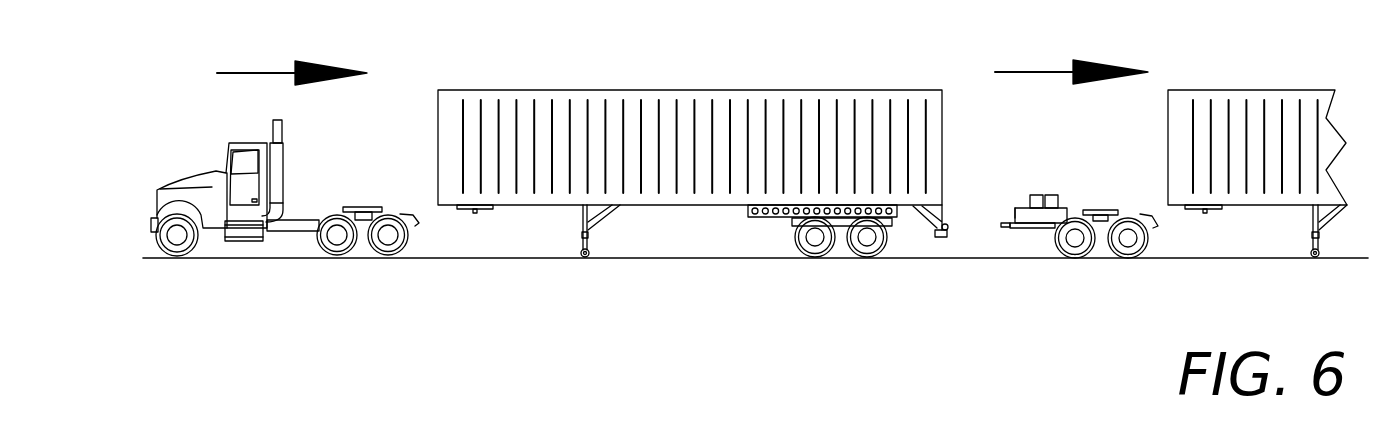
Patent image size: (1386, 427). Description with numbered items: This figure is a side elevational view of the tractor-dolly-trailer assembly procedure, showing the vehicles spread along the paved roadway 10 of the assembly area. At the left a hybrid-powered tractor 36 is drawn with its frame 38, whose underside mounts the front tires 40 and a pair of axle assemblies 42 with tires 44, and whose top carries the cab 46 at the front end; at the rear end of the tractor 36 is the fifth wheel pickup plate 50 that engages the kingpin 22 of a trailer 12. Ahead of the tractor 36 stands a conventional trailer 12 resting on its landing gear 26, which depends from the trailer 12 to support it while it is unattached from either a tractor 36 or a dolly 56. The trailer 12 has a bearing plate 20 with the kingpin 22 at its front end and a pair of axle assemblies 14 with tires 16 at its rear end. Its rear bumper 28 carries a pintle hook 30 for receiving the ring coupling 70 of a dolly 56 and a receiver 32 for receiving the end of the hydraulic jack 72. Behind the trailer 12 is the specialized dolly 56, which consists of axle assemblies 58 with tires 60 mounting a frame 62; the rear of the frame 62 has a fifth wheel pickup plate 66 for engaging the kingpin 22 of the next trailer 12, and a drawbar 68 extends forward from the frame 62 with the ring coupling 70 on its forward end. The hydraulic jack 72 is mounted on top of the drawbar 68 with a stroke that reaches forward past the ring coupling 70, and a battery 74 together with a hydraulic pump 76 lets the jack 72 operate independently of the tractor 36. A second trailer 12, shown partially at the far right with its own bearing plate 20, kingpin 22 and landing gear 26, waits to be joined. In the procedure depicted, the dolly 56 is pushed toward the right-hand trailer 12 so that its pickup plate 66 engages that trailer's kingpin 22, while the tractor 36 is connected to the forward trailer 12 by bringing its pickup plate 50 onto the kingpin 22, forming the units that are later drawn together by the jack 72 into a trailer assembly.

The roadway 10 is at (505, 260).
The trailer 12 is at (724, 75).
The axle assembly 14 is at (866, 242).
The tire 16 is at (822, 271).
The bearing plate 20 is at (497, 207).
The kingpin 22 is at (477, 213).
The landing gear 26 is at (593, 240).
The rear bumper 28 is at (938, 237).
The pintle hook 30 is at (948, 230).
The receiver 32 is at (945, 210).
The tractor 36 is at (285, 240).
The frame 38 is at (296, 232).
The front tire 40 is at (176, 257).
The axle assembly 42 is at (388, 245).
The tire 44 is at (367, 275).
The cab 46 is at (245, 141).
The fifth wheel pickup plate 50 is at (363, 207).
The dolly 56 is at (1081, 242).
The axle assembly 58 is at (1077, 246).
The tire 60 is at (1105, 274).
The frame 62 is at (1048, 228).
The fifth wheel pickup plate 66 is at (1100, 212).
The drawbar 68 is at (1030, 228).
The ring coupling 70 is at (1005, 228).
The hydraulic jack 72 is at (1070, 218).
The battery 74 is at (1036, 195).
The hydraulic pump 76 is at (1062, 205).